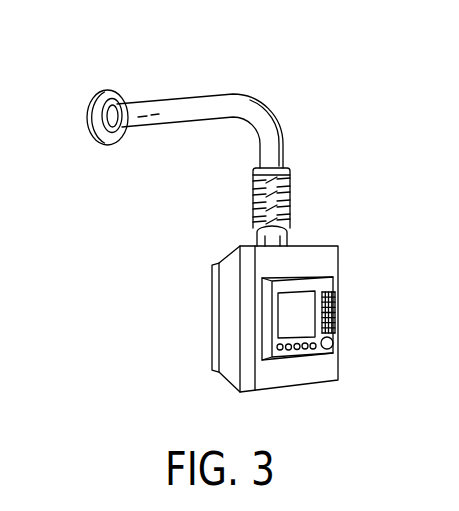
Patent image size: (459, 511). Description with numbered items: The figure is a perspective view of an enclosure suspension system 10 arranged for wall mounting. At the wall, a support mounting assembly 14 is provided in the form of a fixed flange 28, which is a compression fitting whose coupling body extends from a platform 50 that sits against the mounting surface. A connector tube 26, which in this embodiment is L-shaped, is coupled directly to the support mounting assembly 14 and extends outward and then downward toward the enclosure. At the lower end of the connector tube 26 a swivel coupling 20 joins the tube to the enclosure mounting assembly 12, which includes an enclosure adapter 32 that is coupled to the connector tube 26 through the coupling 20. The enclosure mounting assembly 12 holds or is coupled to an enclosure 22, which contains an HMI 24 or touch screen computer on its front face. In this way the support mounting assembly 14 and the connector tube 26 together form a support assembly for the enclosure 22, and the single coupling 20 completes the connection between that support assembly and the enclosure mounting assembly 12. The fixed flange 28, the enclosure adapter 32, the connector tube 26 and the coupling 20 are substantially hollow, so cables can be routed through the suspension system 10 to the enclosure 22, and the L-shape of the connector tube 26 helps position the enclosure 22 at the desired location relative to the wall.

The enclosure suspension system 10 is at (325, 100).
The enclosure mounting assembly 12 is at (253, 241).
The support mounting assembly 14 is at (88, 105).
The swivel coupling 20 is at (291, 176).
The enclosure 22 is at (312, 373).
The HMI 24 is at (303, 312).
The connector tube 26 is at (240, 98).
The fixed flange 28 is at (122, 86).
The enclosure adapter 32 is at (287, 226).
The platform 50 is at (117, 144).